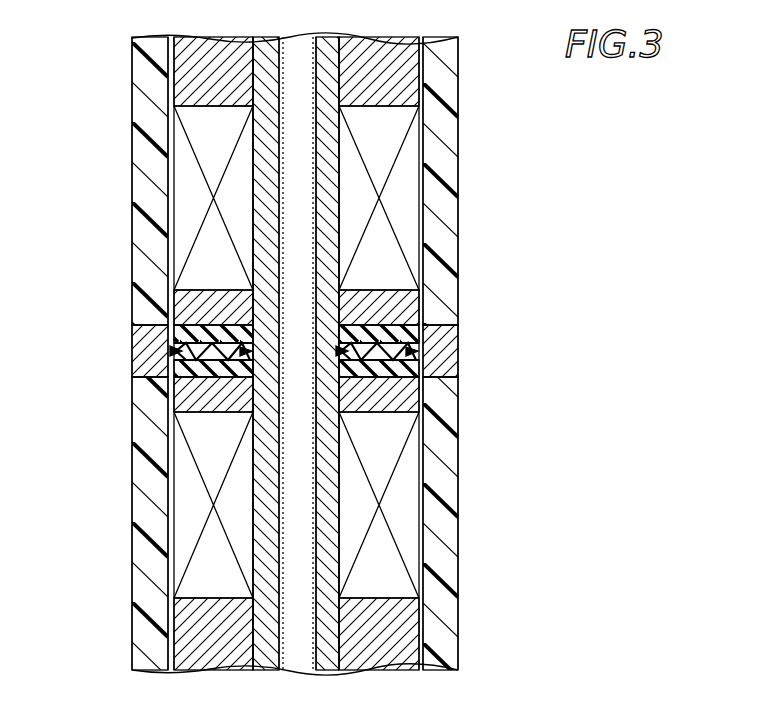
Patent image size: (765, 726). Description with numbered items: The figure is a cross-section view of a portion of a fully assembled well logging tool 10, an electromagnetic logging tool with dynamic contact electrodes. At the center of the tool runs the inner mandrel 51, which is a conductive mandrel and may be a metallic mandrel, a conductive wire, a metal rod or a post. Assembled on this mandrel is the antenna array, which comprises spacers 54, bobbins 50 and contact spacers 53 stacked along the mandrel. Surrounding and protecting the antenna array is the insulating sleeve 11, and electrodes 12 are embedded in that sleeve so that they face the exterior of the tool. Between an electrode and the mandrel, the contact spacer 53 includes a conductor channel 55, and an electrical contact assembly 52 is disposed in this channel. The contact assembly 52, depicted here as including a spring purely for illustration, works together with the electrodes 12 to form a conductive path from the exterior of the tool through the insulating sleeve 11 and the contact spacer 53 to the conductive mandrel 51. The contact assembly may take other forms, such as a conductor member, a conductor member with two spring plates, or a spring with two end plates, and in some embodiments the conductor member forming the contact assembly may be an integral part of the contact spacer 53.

The well logging tool 10 is at (511, 500).
The insulating sleeve 11 is at (442, 587).
The electrodes 12 is at (445, 355).
The bobbins 50 is at (182, 170).
The inner mandrel 51 is at (330, 144).
The contact assembly 52 is at (170, 350).
The contact spacer 53 is at (417, 378).
The spacers 54 is at (410, 304).
The conductor channel 55 is at (167, 378).